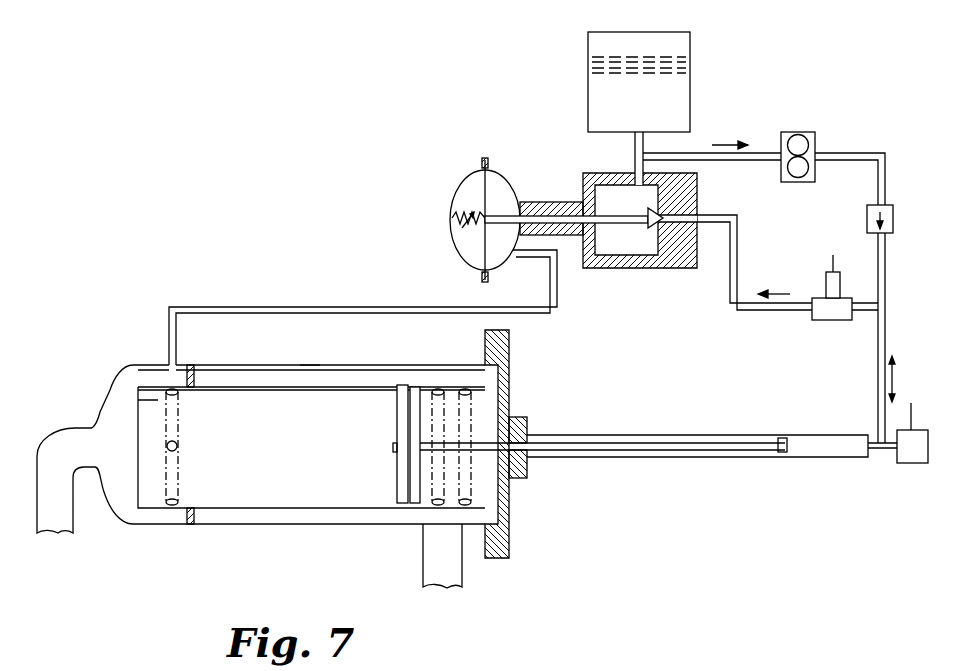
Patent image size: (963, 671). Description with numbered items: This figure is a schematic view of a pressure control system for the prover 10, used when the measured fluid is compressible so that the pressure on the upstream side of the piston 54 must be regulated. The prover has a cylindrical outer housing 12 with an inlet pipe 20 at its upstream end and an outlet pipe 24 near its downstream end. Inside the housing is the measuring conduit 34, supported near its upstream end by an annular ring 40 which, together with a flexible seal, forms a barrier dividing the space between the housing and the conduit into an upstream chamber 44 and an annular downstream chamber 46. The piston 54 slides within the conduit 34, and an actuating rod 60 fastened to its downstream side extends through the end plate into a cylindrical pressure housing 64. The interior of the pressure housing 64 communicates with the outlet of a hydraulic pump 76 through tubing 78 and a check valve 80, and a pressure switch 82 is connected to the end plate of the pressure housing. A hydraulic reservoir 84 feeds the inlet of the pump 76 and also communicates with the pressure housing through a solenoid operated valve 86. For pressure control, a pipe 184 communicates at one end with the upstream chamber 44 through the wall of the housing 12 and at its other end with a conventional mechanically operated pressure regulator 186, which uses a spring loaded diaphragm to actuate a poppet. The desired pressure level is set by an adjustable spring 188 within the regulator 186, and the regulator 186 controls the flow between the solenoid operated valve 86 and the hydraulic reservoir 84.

The prover 10 is at (286, 174).
The cylindrical outer housing 12 is at (306, 364).
The inlet pipe 20 is at (48, 447).
The outlet pipe 24 is at (423, 572).
The measuring conduit 34 is at (371, 382).
The annular ring 40 is at (195, 374).
The upstream chamber 44 is at (118, 393).
The annular downstream chamber 46 is at (248, 369).
The piston 54 is at (395, 432).
The actuating rod 60 is at (617, 442).
The cylindrical pressure housing 64 is at (829, 433).
The hydraulic pump 76 is at (802, 132).
The tubing 78 is at (878, 368).
The check valve 80 is at (893, 208).
The pressure switch 82 is at (918, 463).
The hydraulic reservoir 84 is at (588, 58).
The solenoid operated valve 86 is at (826, 272).
The pipe 184 is at (207, 307).
The mechanically operated pressure regulator 186 is at (571, 183).
The adjustable spring 188 is at (452, 218).